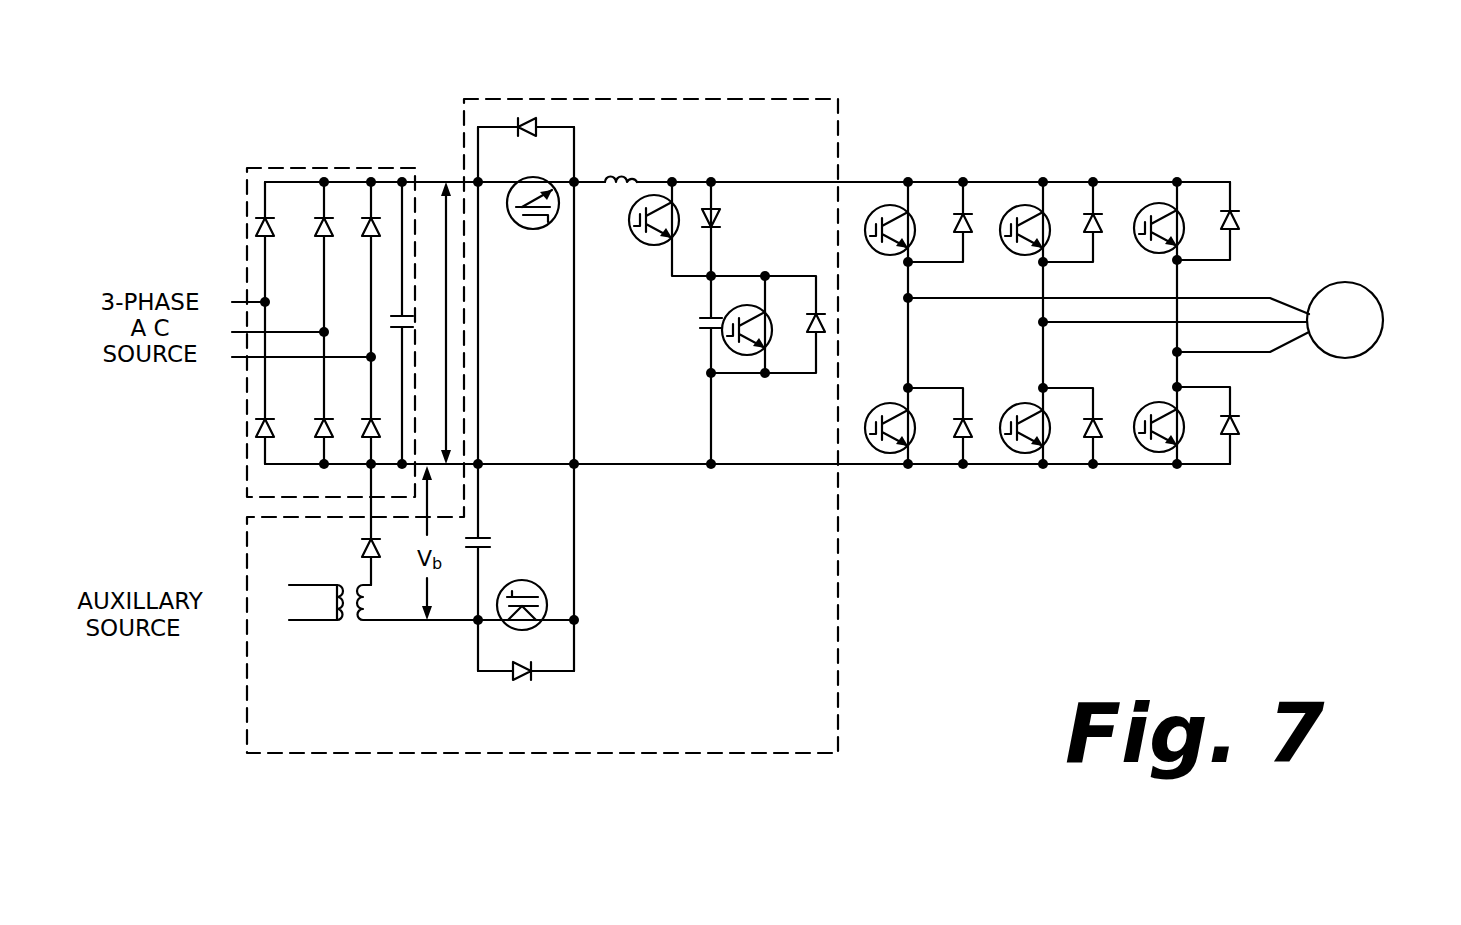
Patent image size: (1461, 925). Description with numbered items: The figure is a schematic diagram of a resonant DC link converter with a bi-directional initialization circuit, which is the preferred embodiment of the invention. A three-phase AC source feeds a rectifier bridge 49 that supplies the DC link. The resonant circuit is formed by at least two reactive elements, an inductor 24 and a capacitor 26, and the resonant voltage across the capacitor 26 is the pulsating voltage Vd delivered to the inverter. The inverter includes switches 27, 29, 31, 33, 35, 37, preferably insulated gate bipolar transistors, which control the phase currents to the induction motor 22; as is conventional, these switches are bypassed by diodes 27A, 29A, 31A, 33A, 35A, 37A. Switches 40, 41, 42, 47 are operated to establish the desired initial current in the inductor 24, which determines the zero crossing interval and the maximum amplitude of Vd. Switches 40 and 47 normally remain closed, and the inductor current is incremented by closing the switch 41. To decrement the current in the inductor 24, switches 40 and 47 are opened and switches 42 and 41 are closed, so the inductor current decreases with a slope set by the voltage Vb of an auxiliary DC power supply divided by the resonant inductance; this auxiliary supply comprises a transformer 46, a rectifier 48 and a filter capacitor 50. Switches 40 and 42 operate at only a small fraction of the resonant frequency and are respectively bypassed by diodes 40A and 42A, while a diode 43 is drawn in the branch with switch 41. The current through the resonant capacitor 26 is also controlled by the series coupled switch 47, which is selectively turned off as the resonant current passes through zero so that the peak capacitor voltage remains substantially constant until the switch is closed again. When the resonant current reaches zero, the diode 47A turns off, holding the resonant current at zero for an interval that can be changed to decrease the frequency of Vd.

The induction motor 22 is at (1356, 285).
The inductor 24 is at (612, 182).
The capacitor 26 is at (700, 323).
The switch 27 is at (884, 207).
The diode 27A is at (970, 225).
The switch 29 is at (1012, 252).
The diode 29A is at (1100, 222).
The switch 31 is at (1150, 252).
The diode 31A is at (1237, 212).
The switch 33 is at (893, 454).
The diode 33A is at (985, 462).
The switch 35 is at (1006, 406).
The diode 35A is at (1083, 447).
The switch 37 is at (1136, 408).
The diode 37A is at (1240, 440).
The switch 40 is at (531, 229).
The diode 40A is at (528, 120).
The switch 41 is at (735, 355).
The switch 42 is at (525, 580).
The diode 42A is at (522, 680).
The diode 43 is at (830, 322).
The transformer 46 is at (358, 622).
The switch 47 is at (650, 245).
The diode 47A is at (728, 212).
The rectifier 48 is at (362, 548).
The three-phase rectifier bridge 49 is at (310, 168).
The filter capacitor 50 is at (488, 540).